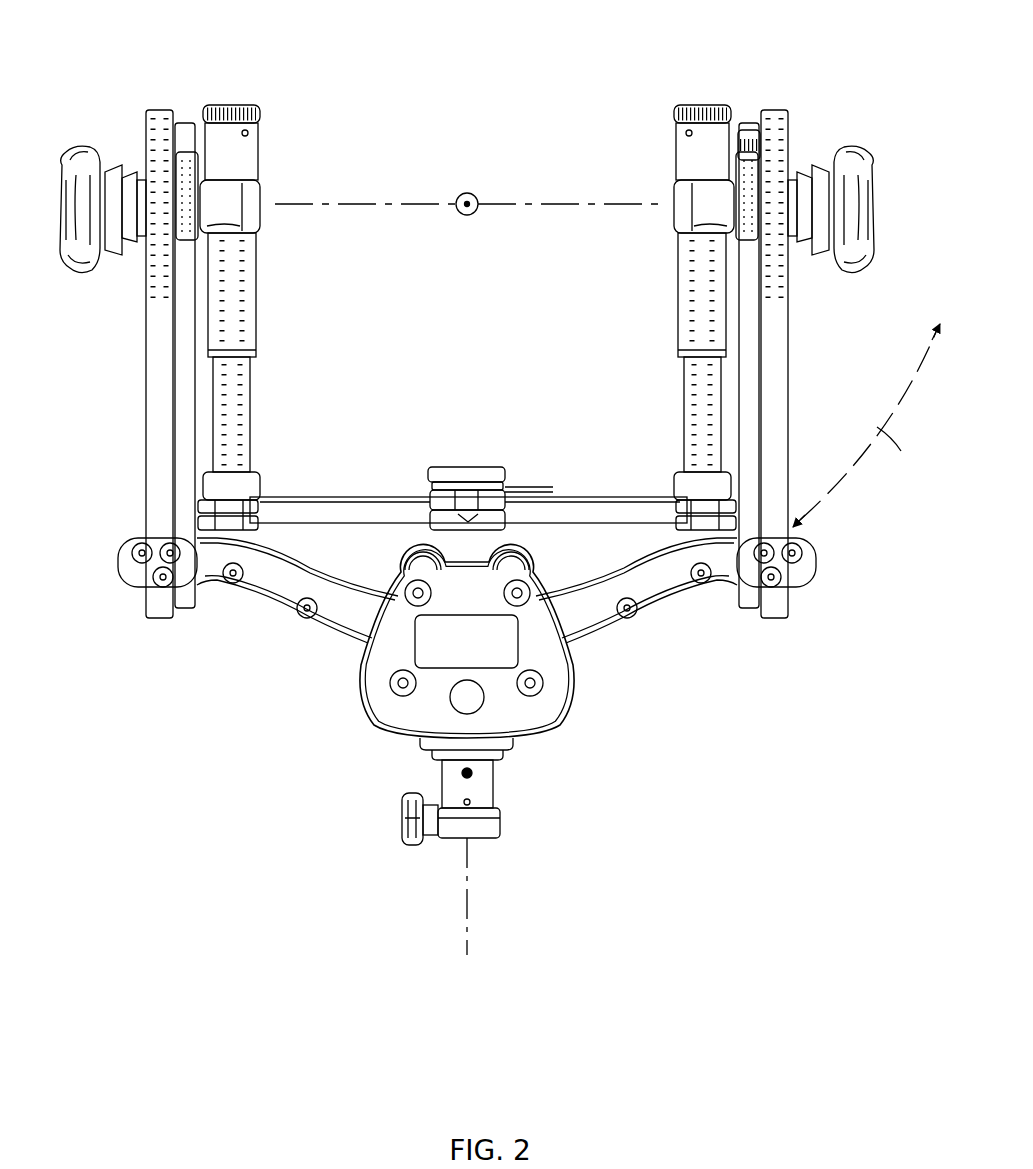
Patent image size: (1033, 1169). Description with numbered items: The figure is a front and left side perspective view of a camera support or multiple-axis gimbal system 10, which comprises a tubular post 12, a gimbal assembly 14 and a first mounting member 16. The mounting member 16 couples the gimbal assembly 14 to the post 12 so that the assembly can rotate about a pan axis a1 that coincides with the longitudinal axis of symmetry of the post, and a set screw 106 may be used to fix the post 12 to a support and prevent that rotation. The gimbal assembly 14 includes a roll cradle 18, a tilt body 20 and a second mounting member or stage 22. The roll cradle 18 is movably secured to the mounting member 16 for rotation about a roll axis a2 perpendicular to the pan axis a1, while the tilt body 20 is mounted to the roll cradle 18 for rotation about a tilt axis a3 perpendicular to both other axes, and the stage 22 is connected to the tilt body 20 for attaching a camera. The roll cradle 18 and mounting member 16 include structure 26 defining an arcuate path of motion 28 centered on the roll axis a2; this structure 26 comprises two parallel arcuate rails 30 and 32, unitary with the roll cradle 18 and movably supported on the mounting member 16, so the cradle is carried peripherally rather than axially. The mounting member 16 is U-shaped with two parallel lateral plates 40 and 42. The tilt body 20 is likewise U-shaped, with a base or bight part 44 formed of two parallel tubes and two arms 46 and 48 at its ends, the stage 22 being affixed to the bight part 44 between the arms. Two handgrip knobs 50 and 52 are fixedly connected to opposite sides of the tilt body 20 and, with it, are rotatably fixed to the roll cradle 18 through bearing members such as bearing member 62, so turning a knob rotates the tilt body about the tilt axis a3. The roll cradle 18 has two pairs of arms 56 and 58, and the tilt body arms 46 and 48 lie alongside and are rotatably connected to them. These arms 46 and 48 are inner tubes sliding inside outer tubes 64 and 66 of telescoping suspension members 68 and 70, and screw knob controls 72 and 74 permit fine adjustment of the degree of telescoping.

The camera support or multiple-axis gimbal system 10 is at (880, 57).
The tubular post 12 is at (490, 776).
The gimbal assembly 14 is at (258, 620).
The first mounting member 16 is at (482, 595).
The roll cradle 18 is at (240, 605).
The tilt body 20 is at (468, 491).
The second mounting member or stage 22 is at (470, 467).
The structure defining an arcuate path of motion 26 is at (823, 556).
The arcuate path of motion 28 is at (866, 425).
The arcuate rail 30 is at (606, 637).
The arcuate rail 32 is at (621, 571).
The lateral plate 40 is at (393, 705).
The lateral plate 42 is at (415, 552).
The base or bight part 44 is at (586, 497).
The arm or inner tube 46 is at (249, 414).
The arm or inner tube 48 is at (686, 390).
The handgrip knob 50 is at (90, 262).
The handgrip knob 52 is at (866, 160).
The arms of roll cradle 56 is at (182, 421).
The arms of roll cradle 58 is at (775, 620).
The bearing member 62 is at (745, 132).
The outer tube 64 is at (258, 300).
The outer tube 66 is at (678, 300).
The telescoping suspension member 68 is at (261, 160).
The telescoping suspension member 70 is at (673, 160).
The screw knob control 72 is at (250, 106).
The screw knob control 74 is at (678, 115).
The set screw 106 is at (408, 815).
The pan axis a1 is at (467, 900).
The roll axis a2 is at (467, 193).
The tilt axis a3 is at (520, 208).